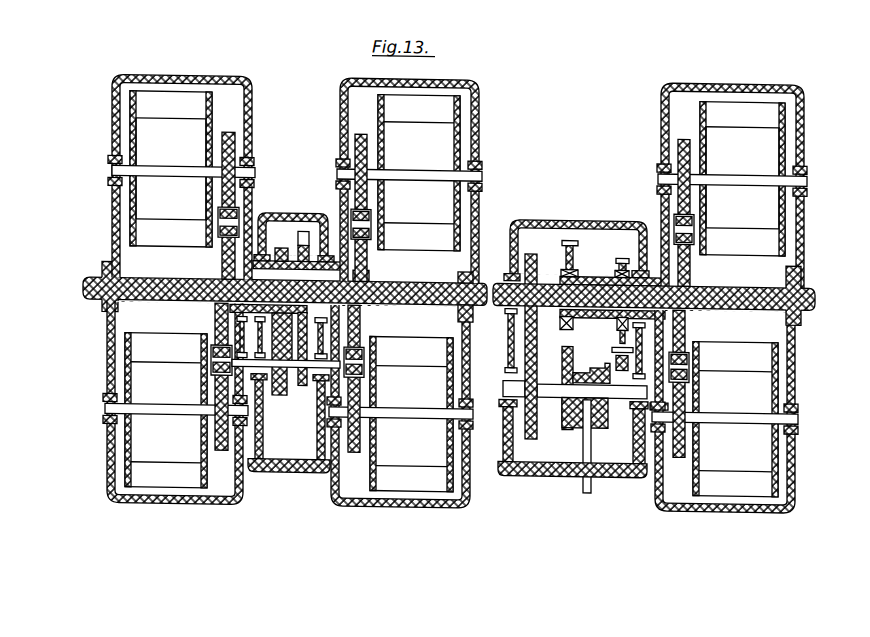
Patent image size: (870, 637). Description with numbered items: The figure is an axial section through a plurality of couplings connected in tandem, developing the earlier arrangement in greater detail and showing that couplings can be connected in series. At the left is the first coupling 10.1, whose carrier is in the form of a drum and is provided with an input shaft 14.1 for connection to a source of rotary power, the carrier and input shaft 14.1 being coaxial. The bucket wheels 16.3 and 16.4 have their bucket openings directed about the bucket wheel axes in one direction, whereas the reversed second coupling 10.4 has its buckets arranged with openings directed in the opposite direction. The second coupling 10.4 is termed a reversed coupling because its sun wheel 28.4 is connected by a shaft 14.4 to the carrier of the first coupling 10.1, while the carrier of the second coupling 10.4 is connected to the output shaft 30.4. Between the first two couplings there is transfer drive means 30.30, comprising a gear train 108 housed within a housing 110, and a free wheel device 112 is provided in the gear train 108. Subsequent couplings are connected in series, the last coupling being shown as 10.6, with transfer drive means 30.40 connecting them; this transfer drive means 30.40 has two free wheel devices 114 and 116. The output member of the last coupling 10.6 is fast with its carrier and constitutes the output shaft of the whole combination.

The first coupling 10.1 is at (444, 268).
The second coupling 10.4 is at (497, 110).
The last coupling 10.6 is at (645, 116).
The bucket wheel 16.3 is at (367, 110).
The bucket wheel 16.4 is at (256, 151).
The shaft 14.4 is at (167, 276).
The input shaft 14.1 is at (92, 298).
The sun wheel 28.4 is at (358, 274).
The housing 110 is at (299, 225).
The free wheel device 112 is at (305, 264).
The free wheel device 114 is at (568, 265).
The free wheel device 116 is at (622, 268).
The gear train 108 is at (295, 380).
The transfer drive means 30.30 is at (285, 412).
The transfer drive means 30.40 is at (583, 376).
The output shaft 30.4 is at (803, 268).